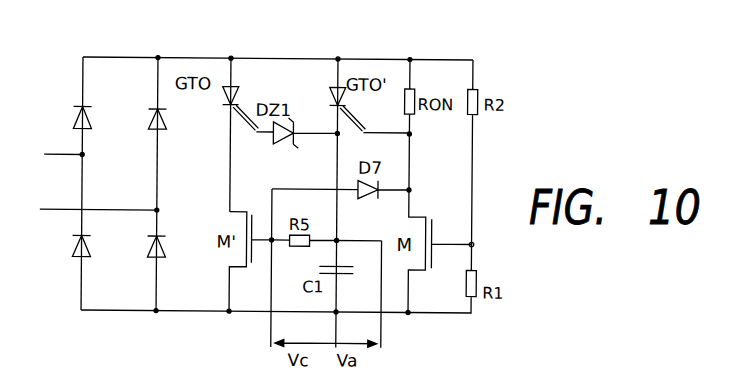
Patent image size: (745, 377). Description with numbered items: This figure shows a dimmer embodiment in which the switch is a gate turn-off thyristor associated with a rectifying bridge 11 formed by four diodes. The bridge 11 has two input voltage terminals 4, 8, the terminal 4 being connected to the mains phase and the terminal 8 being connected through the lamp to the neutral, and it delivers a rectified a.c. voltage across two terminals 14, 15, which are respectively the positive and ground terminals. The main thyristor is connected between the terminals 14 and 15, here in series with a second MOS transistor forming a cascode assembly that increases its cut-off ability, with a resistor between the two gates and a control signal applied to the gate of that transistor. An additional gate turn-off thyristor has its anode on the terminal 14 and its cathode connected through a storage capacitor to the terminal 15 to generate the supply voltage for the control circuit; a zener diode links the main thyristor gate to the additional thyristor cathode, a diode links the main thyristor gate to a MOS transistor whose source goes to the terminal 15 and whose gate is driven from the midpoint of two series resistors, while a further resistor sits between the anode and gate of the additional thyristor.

The input voltage terminal 4 is at (44, 156).
The input voltage terminal 8 is at (40, 211).
The rectifying bridge 11 is at (136, 187).
The terminal 14 is at (157, 58).
The terminal 15 is at (155, 312).